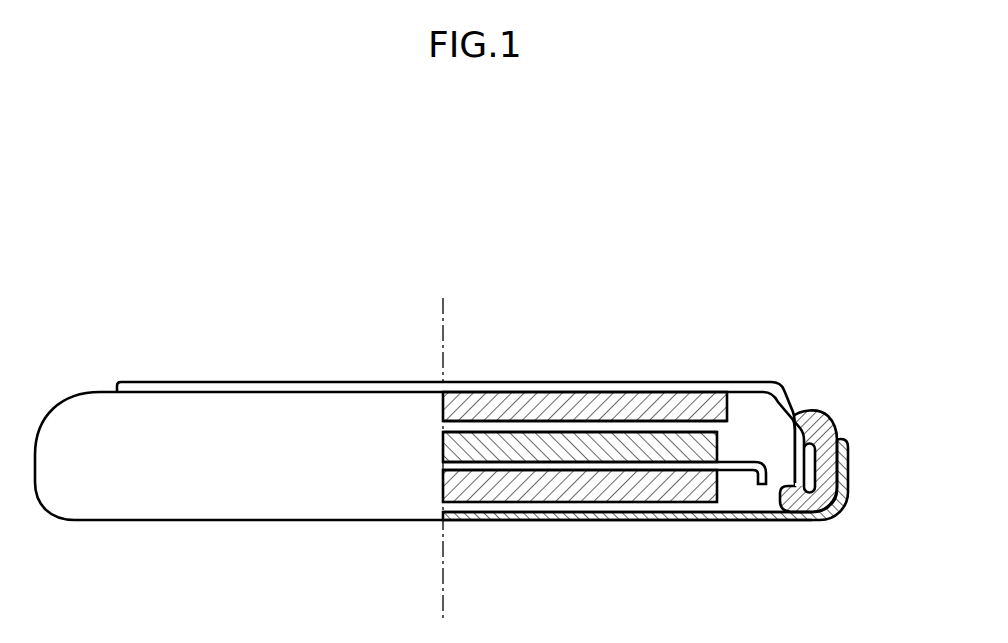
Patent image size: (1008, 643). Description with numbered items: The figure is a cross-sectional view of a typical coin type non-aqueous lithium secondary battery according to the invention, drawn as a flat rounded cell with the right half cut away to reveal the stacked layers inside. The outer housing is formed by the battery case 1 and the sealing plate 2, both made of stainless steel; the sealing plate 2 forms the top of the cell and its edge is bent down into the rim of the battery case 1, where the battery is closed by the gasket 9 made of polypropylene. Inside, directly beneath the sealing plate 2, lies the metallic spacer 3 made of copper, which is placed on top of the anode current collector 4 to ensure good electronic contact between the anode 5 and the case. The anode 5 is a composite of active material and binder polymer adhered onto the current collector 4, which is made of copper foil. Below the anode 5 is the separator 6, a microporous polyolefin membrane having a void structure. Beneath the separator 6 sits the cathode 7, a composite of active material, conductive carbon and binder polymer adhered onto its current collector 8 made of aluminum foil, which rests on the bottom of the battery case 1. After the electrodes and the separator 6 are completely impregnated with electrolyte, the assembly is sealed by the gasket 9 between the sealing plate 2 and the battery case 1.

The battery case 1 is at (848, 472).
The sealing plate 2 is at (482, 383).
The metallic spacer 3 is at (545, 402).
The current collector 4 is at (665, 427).
The anode 5 is at (590, 442).
The separator 6 is at (563, 470).
The cathode 7 is at (503, 497).
The current collector 8 is at (627, 512).
The gasket 9 is at (831, 436).